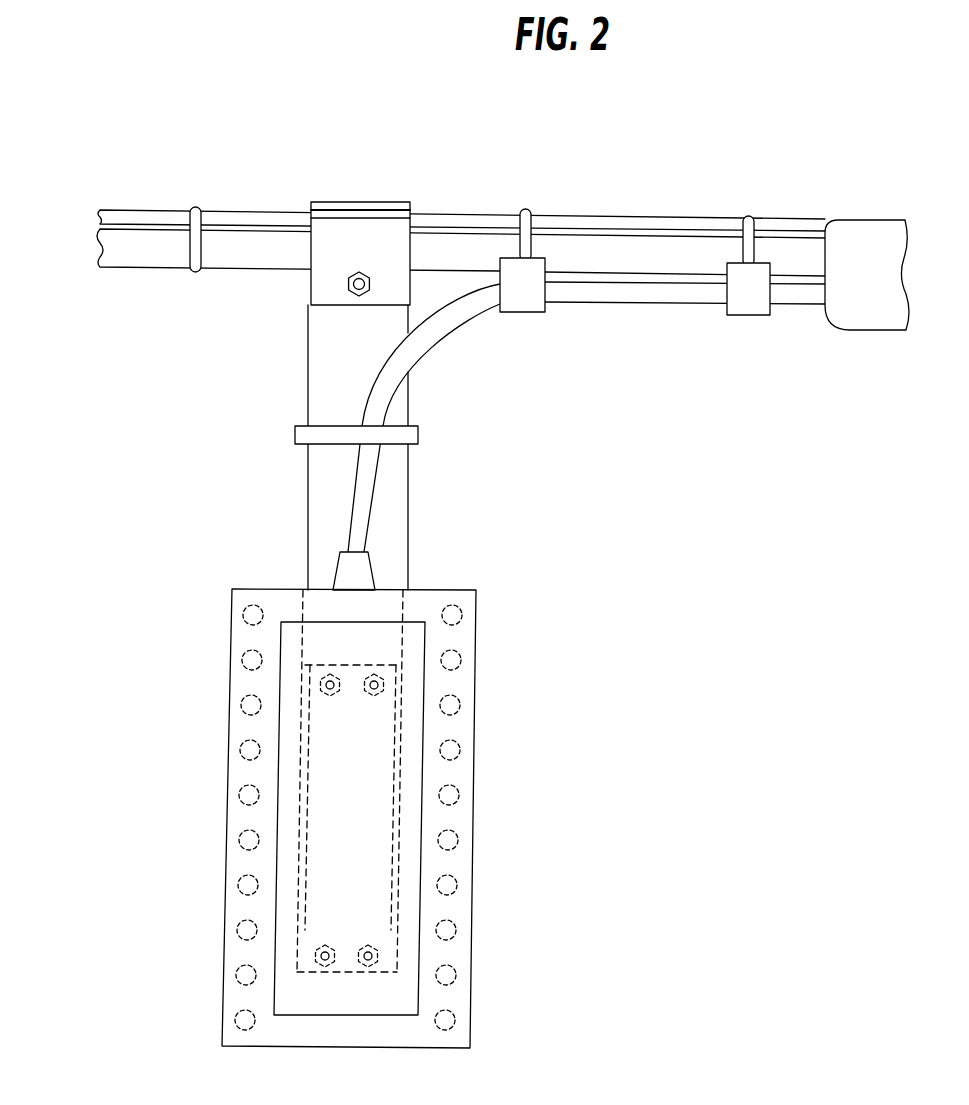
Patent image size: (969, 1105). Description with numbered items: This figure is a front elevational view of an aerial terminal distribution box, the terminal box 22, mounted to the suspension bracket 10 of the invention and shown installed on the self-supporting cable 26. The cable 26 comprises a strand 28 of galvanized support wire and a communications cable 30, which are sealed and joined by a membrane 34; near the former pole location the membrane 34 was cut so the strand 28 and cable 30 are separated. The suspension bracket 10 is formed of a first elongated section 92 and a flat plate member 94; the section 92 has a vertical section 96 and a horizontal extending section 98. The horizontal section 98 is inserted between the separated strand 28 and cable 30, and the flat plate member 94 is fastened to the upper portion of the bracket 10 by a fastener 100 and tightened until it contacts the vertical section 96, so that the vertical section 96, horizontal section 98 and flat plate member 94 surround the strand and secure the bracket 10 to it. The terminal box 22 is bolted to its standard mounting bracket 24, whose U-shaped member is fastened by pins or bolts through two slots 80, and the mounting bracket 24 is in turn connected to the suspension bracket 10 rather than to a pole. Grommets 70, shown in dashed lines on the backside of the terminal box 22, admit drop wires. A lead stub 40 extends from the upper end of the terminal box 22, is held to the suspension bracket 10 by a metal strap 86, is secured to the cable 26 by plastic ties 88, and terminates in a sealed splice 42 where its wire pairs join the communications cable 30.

The suspension bracket 10 is at (320, 368).
The terminal box 22 is at (463, 865).
The mounting bracket 24 is at (390, 853).
The self-supporting cable 26 is at (76, 248).
The strand 28 is at (165, 208).
The communications cable 30 is at (123, 253).
The membrane 34 is at (120, 208).
The lead stub 40 is at (472, 307).
The splice 42 is at (862, 232).
The grommets 70 is at (462, 753).
The slots 80 is at (395, 723).
The metal strap 86 is at (412, 433).
The plastic ties 88 is at (198, 207).
The first elongated section 92 is at (393, 560).
The flat plate member 94 is at (318, 280).
The vertical section 96 is at (393, 523).
The horizontal extending section 98 is at (343, 202).
The fastener 100 is at (360, 272).